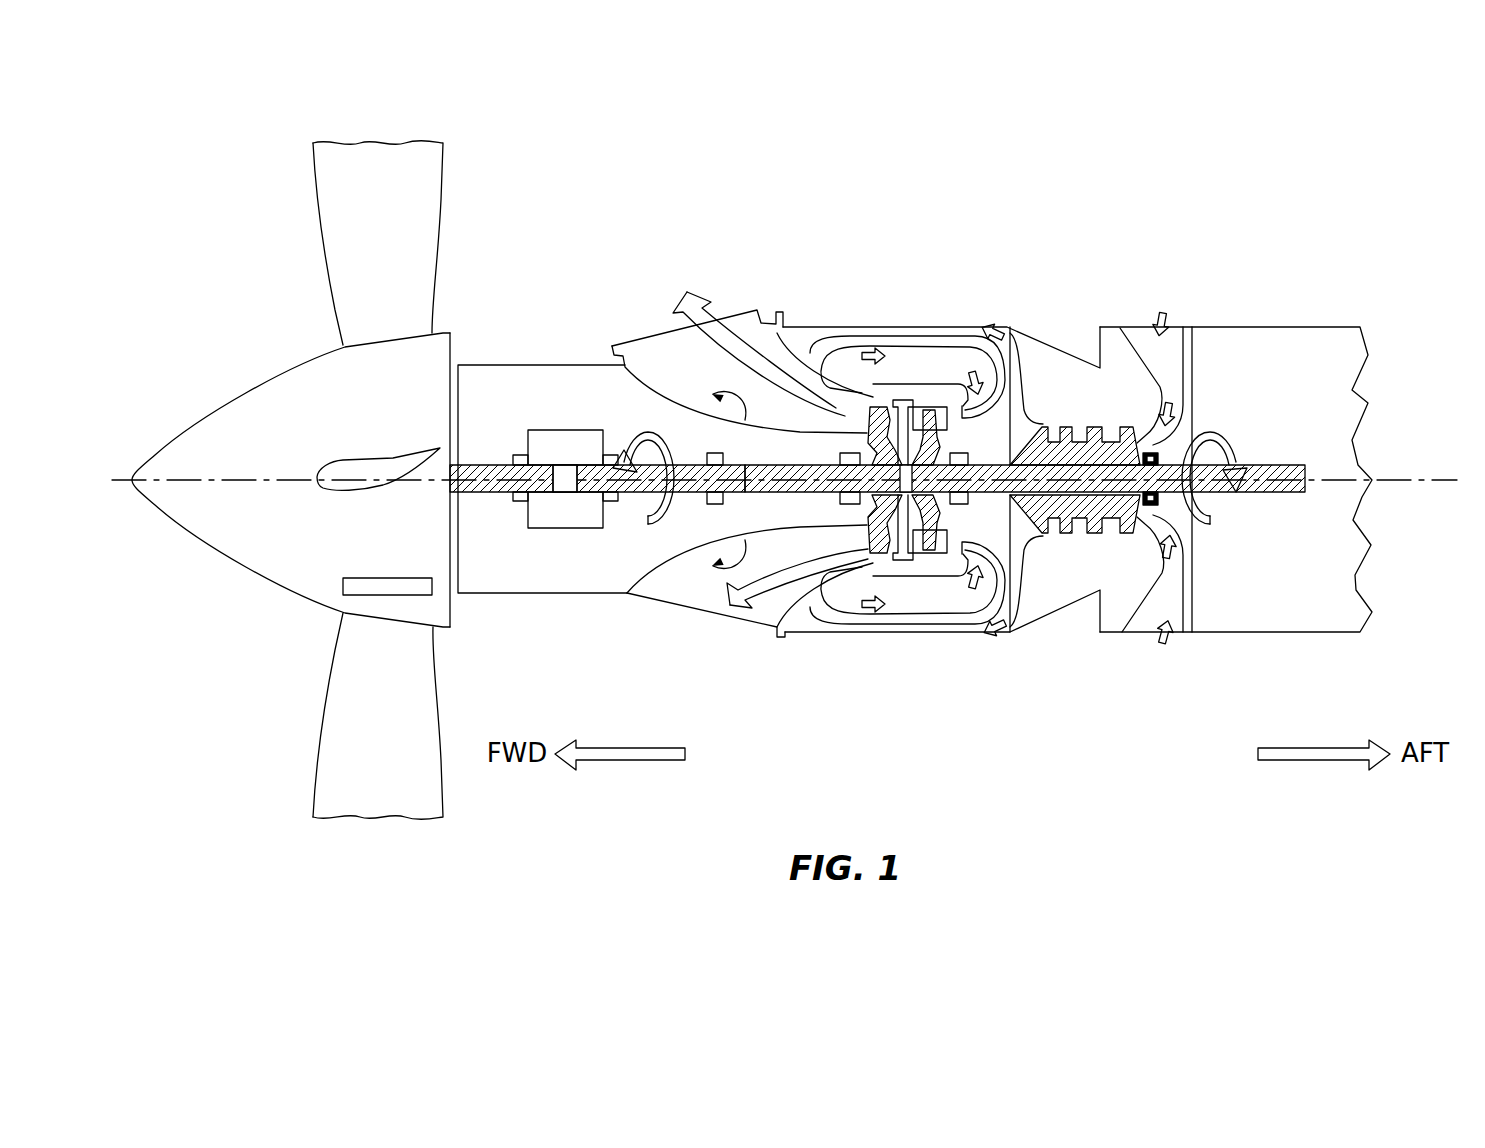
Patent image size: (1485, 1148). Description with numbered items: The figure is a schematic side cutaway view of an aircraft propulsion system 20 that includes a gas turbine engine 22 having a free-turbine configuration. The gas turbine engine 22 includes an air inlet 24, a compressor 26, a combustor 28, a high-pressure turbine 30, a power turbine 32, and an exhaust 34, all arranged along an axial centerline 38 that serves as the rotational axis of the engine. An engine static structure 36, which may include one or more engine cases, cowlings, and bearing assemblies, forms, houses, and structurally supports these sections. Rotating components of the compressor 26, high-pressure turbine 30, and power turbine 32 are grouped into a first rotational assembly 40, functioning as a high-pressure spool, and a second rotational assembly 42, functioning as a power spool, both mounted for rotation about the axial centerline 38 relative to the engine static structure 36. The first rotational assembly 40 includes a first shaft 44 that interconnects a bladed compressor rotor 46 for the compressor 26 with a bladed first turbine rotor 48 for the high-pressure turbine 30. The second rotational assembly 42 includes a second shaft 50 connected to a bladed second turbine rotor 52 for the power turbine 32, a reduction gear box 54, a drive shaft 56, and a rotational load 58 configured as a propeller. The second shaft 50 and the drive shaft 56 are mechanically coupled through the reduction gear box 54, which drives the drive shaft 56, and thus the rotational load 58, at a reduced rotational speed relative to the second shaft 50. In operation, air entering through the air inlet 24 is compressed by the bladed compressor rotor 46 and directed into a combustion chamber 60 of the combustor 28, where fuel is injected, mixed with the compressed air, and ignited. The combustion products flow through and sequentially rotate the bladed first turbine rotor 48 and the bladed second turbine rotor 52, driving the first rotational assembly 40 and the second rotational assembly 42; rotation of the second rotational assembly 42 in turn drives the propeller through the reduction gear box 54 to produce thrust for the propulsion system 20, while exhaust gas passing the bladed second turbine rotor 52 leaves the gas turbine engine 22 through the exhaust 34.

The propulsion system 20 is at (1299, 190).
The gas turbine engine 22 is at (1206, 285).
The air inlet 24 is at (1137, 327).
The compressor 26 is at (1073, 540).
The combustor 28 is at (938, 604).
The high-pressure turbine 30 is at (907, 549).
The power turbine 32 is at (862, 545).
The exhaust 34 is at (650, 333).
The engine static structure 36 is at (918, 327).
The axial centerline 38 is at (1437, 510).
The first rotational assembly 40 is at (1264, 449).
The second rotational assembly 42 is at (684, 523).
The first shaft 44 is at (994, 467).
The bladed compressor rotor 46 is at (1110, 514).
The bladed first turbine rotor 48 is at (930, 417).
The second shaft 50 is at (746, 480).
The bladed second turbine rotor 52 is at (877, 404).
The reduction gear box 54 is at (565, 518).
The drive shaft 56 is at (484, 465).
The rotational load 58 is at (333, 620).
The combustion chamber 60 is at (951, 599).